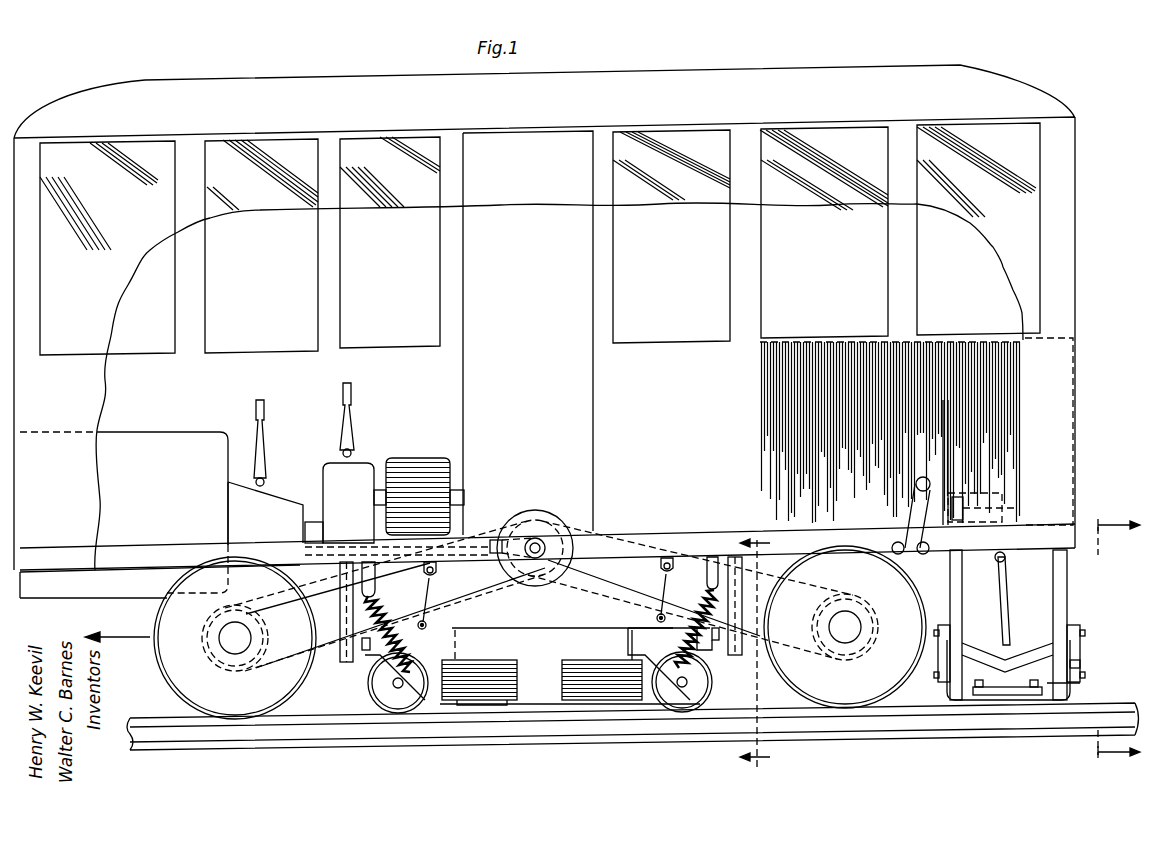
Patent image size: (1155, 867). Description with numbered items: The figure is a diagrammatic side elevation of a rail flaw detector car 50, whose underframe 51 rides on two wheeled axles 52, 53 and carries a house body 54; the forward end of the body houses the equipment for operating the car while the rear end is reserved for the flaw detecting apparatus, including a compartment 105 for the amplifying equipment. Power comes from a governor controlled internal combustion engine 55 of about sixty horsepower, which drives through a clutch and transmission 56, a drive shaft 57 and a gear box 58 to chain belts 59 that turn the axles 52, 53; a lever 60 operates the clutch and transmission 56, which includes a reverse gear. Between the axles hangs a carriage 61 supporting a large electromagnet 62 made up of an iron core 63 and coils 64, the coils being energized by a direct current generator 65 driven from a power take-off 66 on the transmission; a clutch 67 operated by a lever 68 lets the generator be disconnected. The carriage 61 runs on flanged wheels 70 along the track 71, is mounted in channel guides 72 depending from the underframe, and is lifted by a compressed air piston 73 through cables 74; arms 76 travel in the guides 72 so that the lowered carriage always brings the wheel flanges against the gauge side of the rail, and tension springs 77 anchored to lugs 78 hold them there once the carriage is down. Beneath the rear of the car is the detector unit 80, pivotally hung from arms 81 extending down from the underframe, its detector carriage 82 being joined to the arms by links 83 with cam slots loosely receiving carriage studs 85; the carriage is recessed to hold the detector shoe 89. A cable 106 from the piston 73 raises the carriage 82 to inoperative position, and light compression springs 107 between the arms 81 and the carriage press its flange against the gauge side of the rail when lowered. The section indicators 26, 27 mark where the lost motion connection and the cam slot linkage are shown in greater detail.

The detector car 50 is at (1082, 320).
The underframe 51 is at (662, 536).
The wheeled axle 52 is at (235, 648).
The wheeled axle 53 is at (847, 636).
The house body 54 is at (1066, 200).
The internal combustion engine 55 is at (153, 440).
The clutch and transmission 56 is at (276, 500).
The drive shaft 57 is at (468, 540).
The gear box 58 is at (537, 578).
The chain belts 59 is at (606, 580).
The lever 60 is at (264, 444).
The carriage 61 is at (670, 663).
The electromagnet 62 is at (517, 705).
The iron core 63 is at (527, 645).
The coils 64 is at (560, 679).
The generator 65 is at (420, 458).
The power take-off 66 is at (315, 520).
The clutch 67 is at (362, 470).
The lever 68 is at (355, 418).
The flanged wheels 70 is at (367, 692).
The track 71 is at (365, 733).
The channel guides 72 is at (343, 660).
The piston 73 is at (965, 495).
The cables 74 is at (660, 585).
The arms 76 is at (716, 642).
The tension springs 77 is at (710, 600).
The lugs 78 is at (705, 582).
The detector unit 80 is at (1075, 692).
The arms 81 is at (1068, 589).
The detector carriage 82 is at (1078, 683).
The links 83 is at (1082, 641).
The carriage studs 85 is at (1082, 665).
The detector shoe 89 is at (998, 687).
The compartment 105 is at (916, 431).
The cable 106 is at (1006, 626).
The compression springs 107 is at (1012, 652).
The section line 26 is at (767, 651).
The section line 27 is at (1119, 639).